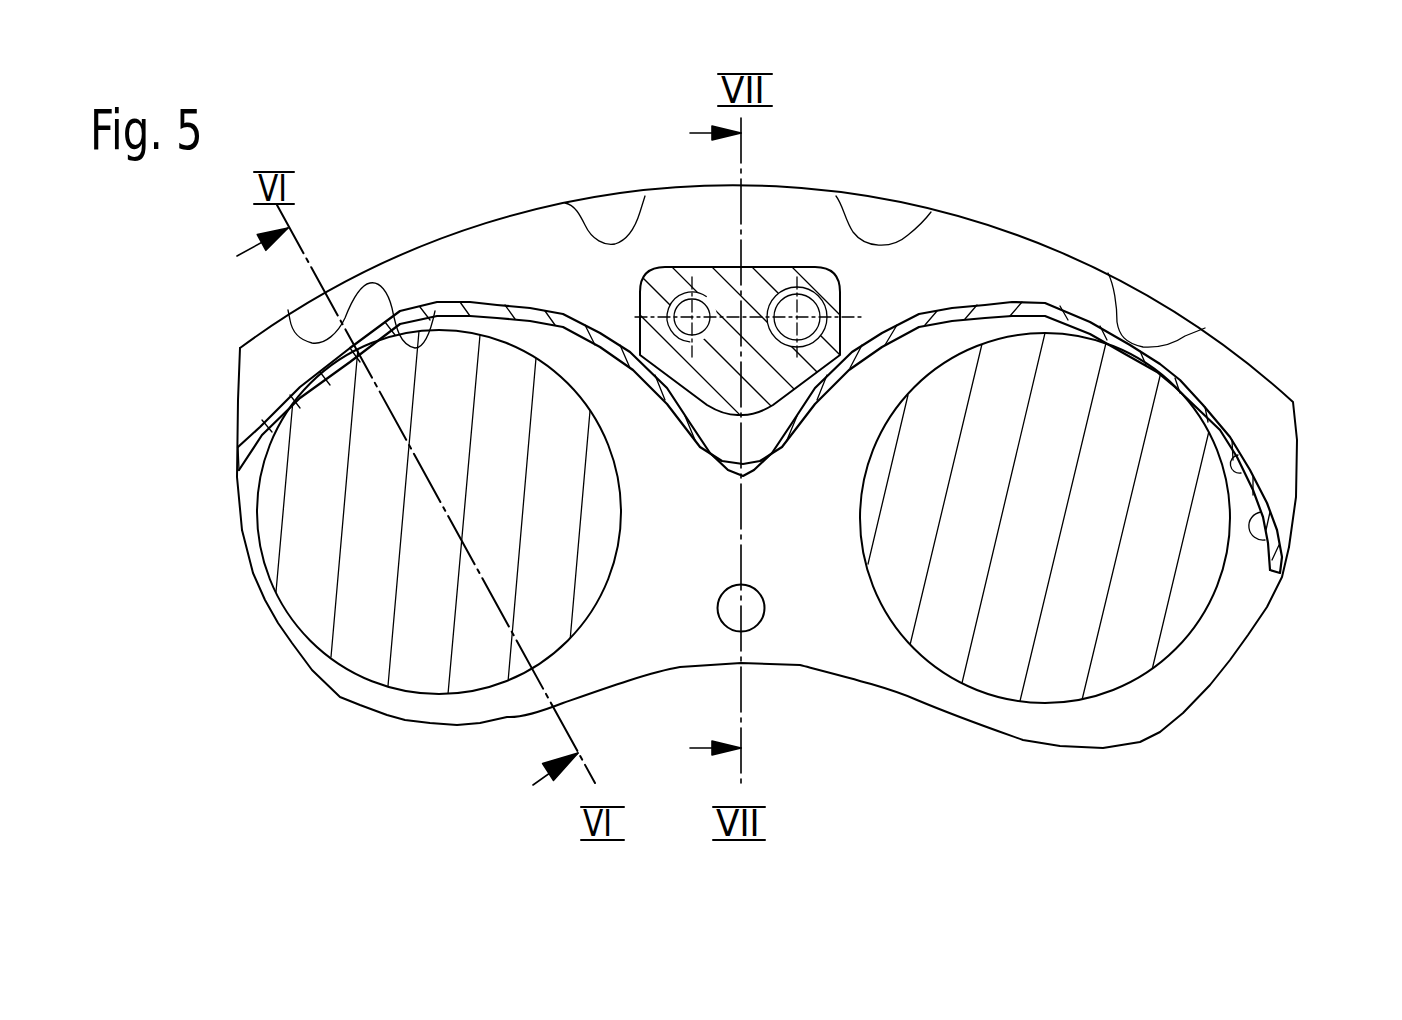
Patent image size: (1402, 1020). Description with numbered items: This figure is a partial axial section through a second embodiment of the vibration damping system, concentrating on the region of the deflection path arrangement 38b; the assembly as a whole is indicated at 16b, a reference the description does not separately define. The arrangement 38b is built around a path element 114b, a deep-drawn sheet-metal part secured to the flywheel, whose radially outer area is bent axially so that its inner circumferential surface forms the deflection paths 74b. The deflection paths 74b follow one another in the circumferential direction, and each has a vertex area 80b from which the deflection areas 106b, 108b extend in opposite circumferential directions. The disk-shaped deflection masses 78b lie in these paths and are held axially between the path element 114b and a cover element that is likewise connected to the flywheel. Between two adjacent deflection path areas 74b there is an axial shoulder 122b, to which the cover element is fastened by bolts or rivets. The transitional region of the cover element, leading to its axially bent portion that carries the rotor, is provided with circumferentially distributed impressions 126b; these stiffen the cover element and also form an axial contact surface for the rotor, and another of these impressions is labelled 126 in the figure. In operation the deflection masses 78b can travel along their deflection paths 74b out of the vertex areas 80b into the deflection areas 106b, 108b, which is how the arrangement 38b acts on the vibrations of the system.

The brake caliper 16b is at (1085, 152).
The deflection path arrangement 38b is at (910, 707).
The deflection paths 74b is at (477, 318).
The deflection masses 78b is at (408, 683).
The vertex areas 80b is at (412, 330).
The deflection area 106b is at (1040, 327).
The deflection area 108b is at (1237, 442).
The path element 114b is at (960, 333).
The axial shoulder 122b is at (790, 262).
The impressions 126b is at (915, 227).
The recess 126 is at (1160, 320).